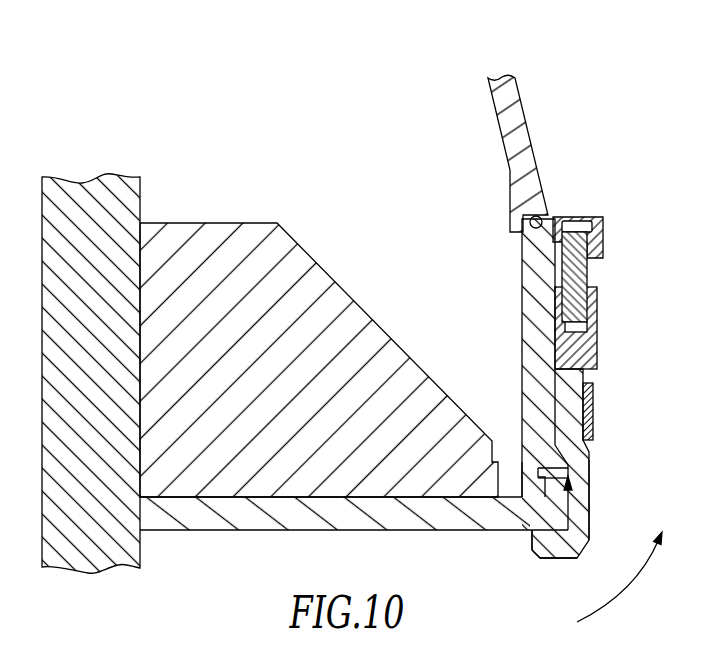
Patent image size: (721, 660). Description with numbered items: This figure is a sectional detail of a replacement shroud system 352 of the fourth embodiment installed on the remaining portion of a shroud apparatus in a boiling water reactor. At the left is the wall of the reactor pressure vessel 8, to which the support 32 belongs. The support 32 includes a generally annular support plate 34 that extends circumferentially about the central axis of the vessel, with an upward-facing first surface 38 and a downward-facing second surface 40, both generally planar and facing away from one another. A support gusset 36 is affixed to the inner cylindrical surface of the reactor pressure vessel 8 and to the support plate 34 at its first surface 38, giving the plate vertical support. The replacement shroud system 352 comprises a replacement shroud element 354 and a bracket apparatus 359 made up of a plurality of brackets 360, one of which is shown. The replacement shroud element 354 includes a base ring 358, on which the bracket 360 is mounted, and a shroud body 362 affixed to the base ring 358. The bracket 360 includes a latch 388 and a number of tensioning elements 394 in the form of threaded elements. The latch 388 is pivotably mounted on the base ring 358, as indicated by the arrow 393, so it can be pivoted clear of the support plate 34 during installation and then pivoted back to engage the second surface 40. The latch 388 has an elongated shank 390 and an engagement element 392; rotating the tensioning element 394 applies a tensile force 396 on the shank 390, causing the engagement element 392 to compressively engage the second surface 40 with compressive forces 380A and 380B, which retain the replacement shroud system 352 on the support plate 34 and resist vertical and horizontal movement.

The reactor pressure vessel 8 is at (140, 546).
The support 32 is at (354, 551).
The support plate 34 is at (354, 538).
The support gussets 36 is at (292, 243).
The first surface 38 is at (354, 547).
The second surface 40 is at (450, 532).
The replacement shroud system 352 is at (567, 322).
The replacement shroud element 354 is at (550, 132).
The base ring 358 is at (522, 268).
The bracket apparatus 359 is at (603, 334).
The brackets 360 is at (603, 446).
The shroud body 362 is at (529, 133).
The compressive force 380A is at (512, 480).
The compressive force 380B is at (510, 546).
The latch 388 is at (596, 482).
The elongated shank 390 is at (589, 527).
The engagement element 392 is at (550, 528).
The arrow 393 is at (632, 582).
The tensioning elements 394 is at (587, 272).
The tensile force 396 is at (552, 514).